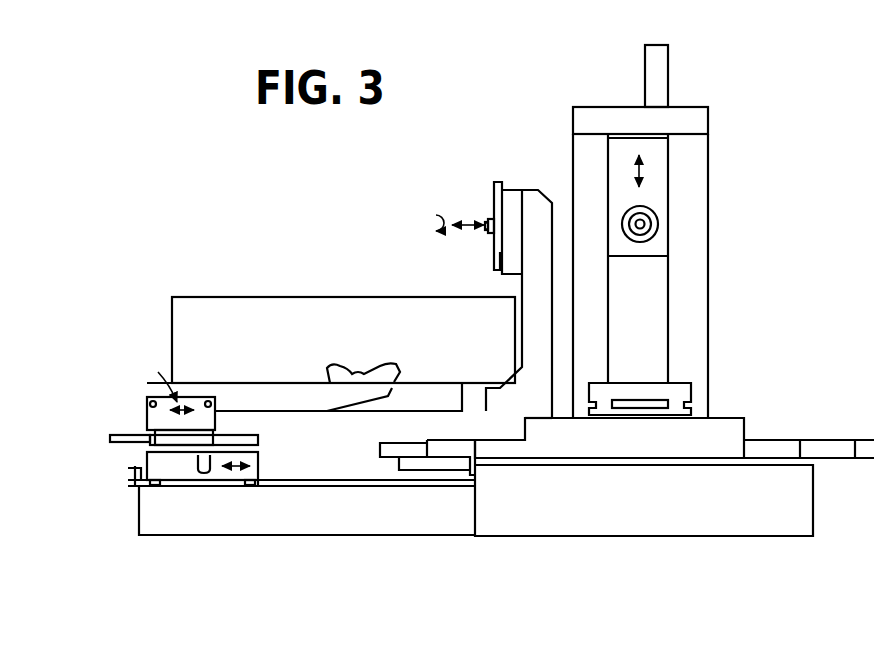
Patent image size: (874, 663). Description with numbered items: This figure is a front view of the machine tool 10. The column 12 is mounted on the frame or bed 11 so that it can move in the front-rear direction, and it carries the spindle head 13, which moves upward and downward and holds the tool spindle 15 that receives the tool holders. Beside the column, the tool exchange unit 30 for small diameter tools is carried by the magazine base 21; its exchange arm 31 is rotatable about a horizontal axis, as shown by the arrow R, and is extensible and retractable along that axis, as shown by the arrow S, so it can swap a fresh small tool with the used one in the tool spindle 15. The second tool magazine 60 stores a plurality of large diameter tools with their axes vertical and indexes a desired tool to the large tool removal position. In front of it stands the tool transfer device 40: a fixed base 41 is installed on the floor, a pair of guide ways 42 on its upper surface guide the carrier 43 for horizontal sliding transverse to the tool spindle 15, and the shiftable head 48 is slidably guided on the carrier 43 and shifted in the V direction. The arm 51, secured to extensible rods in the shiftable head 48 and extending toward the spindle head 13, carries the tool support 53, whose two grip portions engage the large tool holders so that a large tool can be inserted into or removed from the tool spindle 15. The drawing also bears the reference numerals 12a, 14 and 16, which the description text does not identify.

The machine tool 10 is at (758, 318).
The frame or bed 11 is at (800, 508).
The column 12 is at (695, 297).
The column top portion 12a is at (573, 155).
The spindle head 13 is at (659, 172).
The base 14 is at (745, 432).
The tool spindle 15 is at (650, 225).
The slide block 16 is at (682, 397).
The magazine base 21 is at (538, 200).
The tool exchange unit 30 is at (485, 246).
The exchange arm 31 is at (495, 207).
The tool transfer device 40 is at (267, 380).
The fixed base 41 is at (295, 523).
The guide ways 42 is at (350, 483).
The carrier 43 is at (180, 463).
The shiftable head 48 is at (150, 418).
The arm 51 is at (230, 390).
The tool support 53 is at (362, 376).
The second tool magazine 60 is at (222, 294).